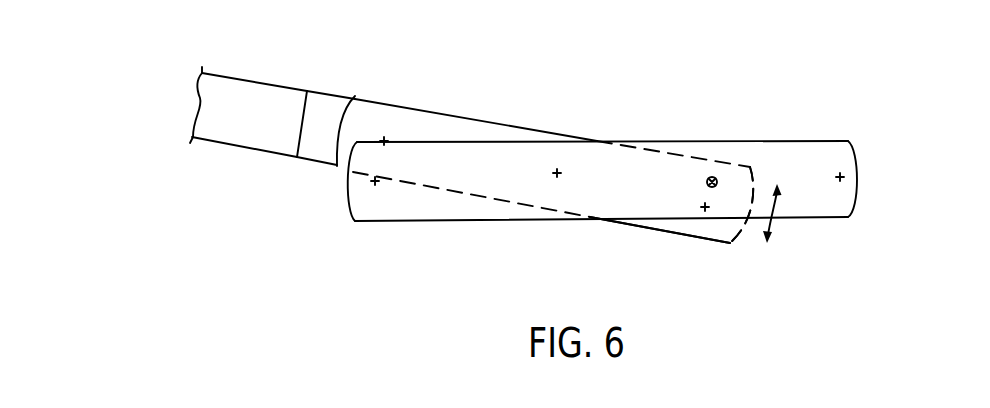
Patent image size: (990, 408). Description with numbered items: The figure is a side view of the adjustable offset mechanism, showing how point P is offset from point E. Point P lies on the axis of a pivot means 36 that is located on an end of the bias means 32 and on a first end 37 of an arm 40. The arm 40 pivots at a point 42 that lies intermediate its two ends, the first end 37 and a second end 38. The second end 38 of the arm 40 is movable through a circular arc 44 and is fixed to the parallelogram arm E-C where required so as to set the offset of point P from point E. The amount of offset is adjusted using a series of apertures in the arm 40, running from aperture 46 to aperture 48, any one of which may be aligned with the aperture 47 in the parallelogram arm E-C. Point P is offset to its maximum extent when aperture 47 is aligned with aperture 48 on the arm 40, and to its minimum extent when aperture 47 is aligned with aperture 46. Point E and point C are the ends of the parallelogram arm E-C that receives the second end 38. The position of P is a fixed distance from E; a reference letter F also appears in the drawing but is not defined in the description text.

The bias means 32 is at (233, 130).
The pivot means 36 is at (322, 138).
The first end of arm 37 is at (370, 89).
The second end of arm 38 is at (708, 226).
The arm 40 is at (538, 130).
The pivot point of arm 42 is at (561, 173).
The circular arc 44 is at (778, 221).
The aperture in arm (minimum offset) 46 is at (700, 206).
The aperture in parallelogram arm E-C 47 is at (718, 180).
The aperture in arm (maximum offset) 48 is at (709, 177).
The point C of parallelogram arm C is at (847, 170).
The point E is at (373, 182).
The point F on outer tube end F is at (381, 139).